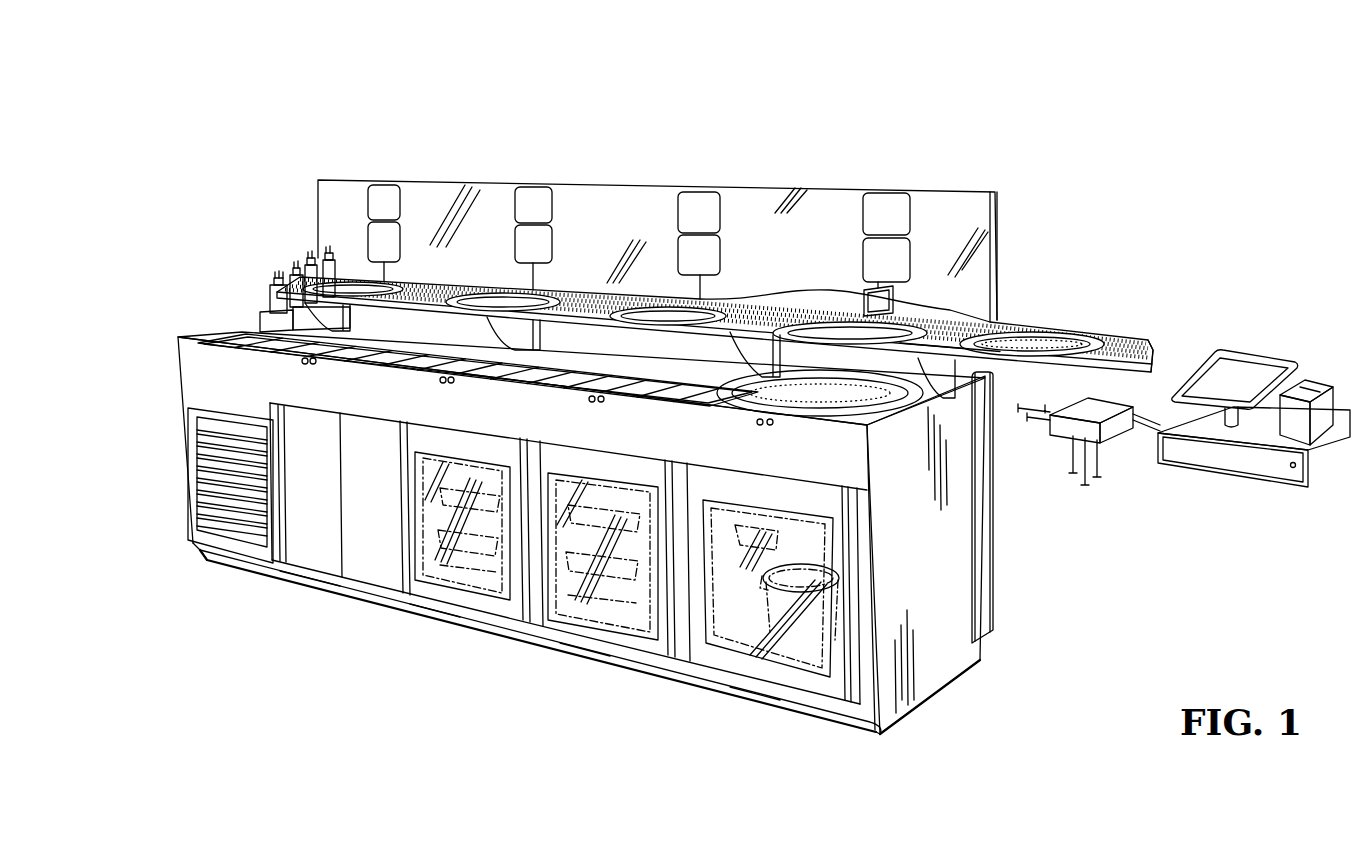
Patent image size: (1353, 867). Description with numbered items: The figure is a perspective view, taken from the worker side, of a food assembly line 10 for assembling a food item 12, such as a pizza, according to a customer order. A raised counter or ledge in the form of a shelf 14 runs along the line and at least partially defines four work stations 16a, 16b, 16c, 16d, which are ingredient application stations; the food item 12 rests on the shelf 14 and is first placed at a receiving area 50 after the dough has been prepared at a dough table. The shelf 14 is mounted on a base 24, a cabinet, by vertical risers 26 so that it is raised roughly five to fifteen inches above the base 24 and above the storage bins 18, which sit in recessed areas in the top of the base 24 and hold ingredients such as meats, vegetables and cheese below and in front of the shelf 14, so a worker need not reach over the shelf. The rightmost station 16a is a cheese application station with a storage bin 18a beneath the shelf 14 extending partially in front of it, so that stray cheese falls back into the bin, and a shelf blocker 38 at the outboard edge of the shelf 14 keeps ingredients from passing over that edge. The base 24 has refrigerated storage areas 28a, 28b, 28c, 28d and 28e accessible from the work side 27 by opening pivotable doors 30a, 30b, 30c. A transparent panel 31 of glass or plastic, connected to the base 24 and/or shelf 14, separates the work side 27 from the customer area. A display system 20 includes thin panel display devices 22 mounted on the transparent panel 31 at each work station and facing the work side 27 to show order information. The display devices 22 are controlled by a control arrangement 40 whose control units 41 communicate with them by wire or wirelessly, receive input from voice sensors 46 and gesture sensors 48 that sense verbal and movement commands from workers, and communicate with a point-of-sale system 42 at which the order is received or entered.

The food assembly line 10 is at (1000, 122).
The food item 12 is at (1033, 325).
The shelf 14 is at (1148, 328).
The work station 16a is at (917, 248).
The work station 16b is at (730, 238).
The work station 16c is at (560, 232).
The work station 16d is at (407, 223).
The storage bins 18 is at (223, 328).
The storage bin 18a is at (917, 380).
The display system 20 is at (353, 210).
The display devices 22 is at (362, 182).
The base 24 is at (943, 577).
The vertical risers 26 is at (863, 385).
The work side 27 is at (838, 768).
The storage area 28a is at (753, 713).
The storage area 28b is at (587, 672).
The storage area 28c is at (437, 651).
The storage area 28d is at (325, 597).
The base section 28e is at (205, 555).
The pivotable door 30a is at (770, 675).
The pivotable door 30b is at (597, 635).
The pivotable door 30c is at (453, 612).
The transparent panel 31 is at (925, 307).
The shelf blocker 38 is at (990, 293).
The control arrangement 40 is at (1133, 397).
The control units 41 is at (1110, 443).
The point-of-sale system 42 is at (1227, 480).
The voice sensors 46 is at (305, 365).
The gesture sensors 48 is at (313, 365).
The receiving area 50 is at (1100, 308).